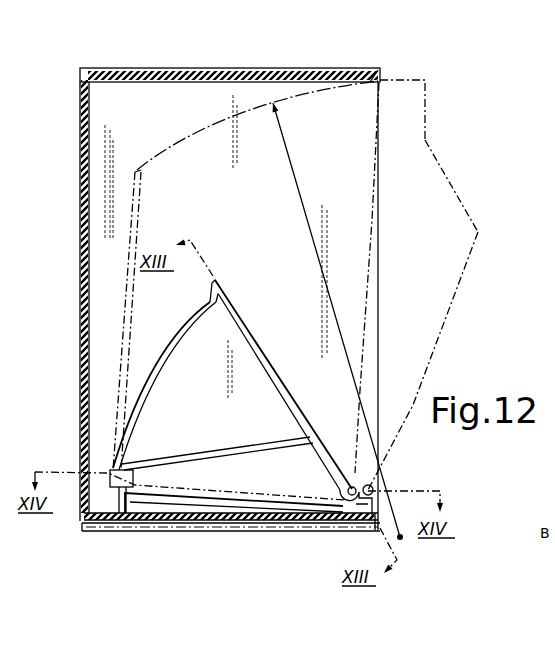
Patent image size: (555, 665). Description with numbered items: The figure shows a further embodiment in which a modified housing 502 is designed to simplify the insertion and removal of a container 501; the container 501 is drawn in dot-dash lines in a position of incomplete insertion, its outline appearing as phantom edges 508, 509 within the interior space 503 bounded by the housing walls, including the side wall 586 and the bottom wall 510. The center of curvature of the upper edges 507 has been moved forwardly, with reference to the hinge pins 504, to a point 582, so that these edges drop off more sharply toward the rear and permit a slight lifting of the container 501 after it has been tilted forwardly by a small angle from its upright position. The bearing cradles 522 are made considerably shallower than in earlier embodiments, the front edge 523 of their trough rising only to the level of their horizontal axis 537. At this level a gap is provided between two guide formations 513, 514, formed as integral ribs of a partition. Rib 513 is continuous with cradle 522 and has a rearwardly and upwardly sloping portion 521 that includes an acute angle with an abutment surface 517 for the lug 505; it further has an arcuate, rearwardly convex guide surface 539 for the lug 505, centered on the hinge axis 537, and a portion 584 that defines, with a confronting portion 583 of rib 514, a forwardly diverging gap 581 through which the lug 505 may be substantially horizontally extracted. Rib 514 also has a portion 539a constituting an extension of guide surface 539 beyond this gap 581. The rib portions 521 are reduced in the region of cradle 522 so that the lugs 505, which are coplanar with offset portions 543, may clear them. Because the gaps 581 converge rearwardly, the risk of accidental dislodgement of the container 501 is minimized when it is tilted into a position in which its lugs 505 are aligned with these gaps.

The container 501 is at (312, 138).
The housing 502 is at (113, 66).
The interior chamber 503 is at (266, 222).
The hinge pins 504 is at (346, 446).
The lug 505 is at (108, 470).
The upper edges 507 is at (205, 125).
The phantom edge 508 is at (427, 126).
The phantom door position 509 is at (463, 200).
The bottom wall 510 is at (148, 521).
The guide formation 513 is at (172, 346).
The guide formation 514 is at (229, 507).
The abutment surface 517 is at (210, 290).
The sloping portion 521 is at (267, 352).
The bearing cradle 522 is at (352, 503).
The front edge 523 is at (368, 492).
The horizontal axis 537 is at (343, 494).
The guide surface 539 is at (161, 358).
The portion 539a is at (118, 500).
The offset portions 543 is at (430, 265).
The gap 581 is at (272, 472).
The point 582 is at (400, 539).
The portion 583 is at (197, 503).
The portion 584 is at (215, 455).
The side wall 586 is at (115, 147).